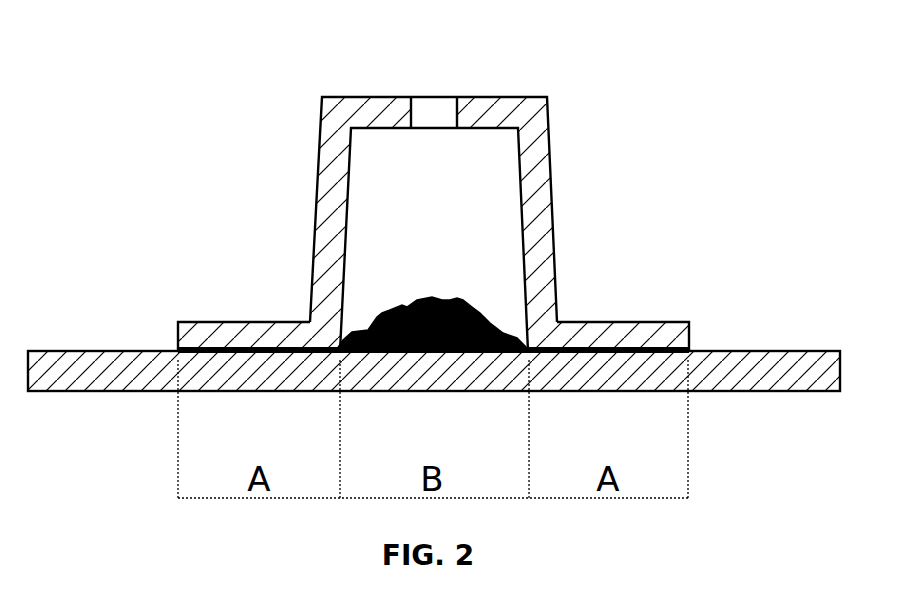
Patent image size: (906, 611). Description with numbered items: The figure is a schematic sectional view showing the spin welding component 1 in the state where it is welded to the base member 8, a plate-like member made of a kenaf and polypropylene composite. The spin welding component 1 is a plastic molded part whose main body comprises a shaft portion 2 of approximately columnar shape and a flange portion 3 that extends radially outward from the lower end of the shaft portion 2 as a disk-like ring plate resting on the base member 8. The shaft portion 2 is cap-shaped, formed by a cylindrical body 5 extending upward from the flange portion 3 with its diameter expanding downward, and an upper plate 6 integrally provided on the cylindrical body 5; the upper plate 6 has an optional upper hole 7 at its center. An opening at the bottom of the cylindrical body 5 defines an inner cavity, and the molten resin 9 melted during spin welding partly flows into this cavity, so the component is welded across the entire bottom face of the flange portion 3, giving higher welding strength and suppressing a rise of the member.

The spin welding component 1 is at (429, 180).
The shaft portion 2 is at (316, 210).
The flange portion 3 is at (232, 333).
The cylindrical body 5 is at (541, 190).
The upper plate 6 is at (525, 97).
The upper hole 7 is at (447, 97).
The base member 8 is at (120, 375).
The molten resin 9 is at (487, 325).